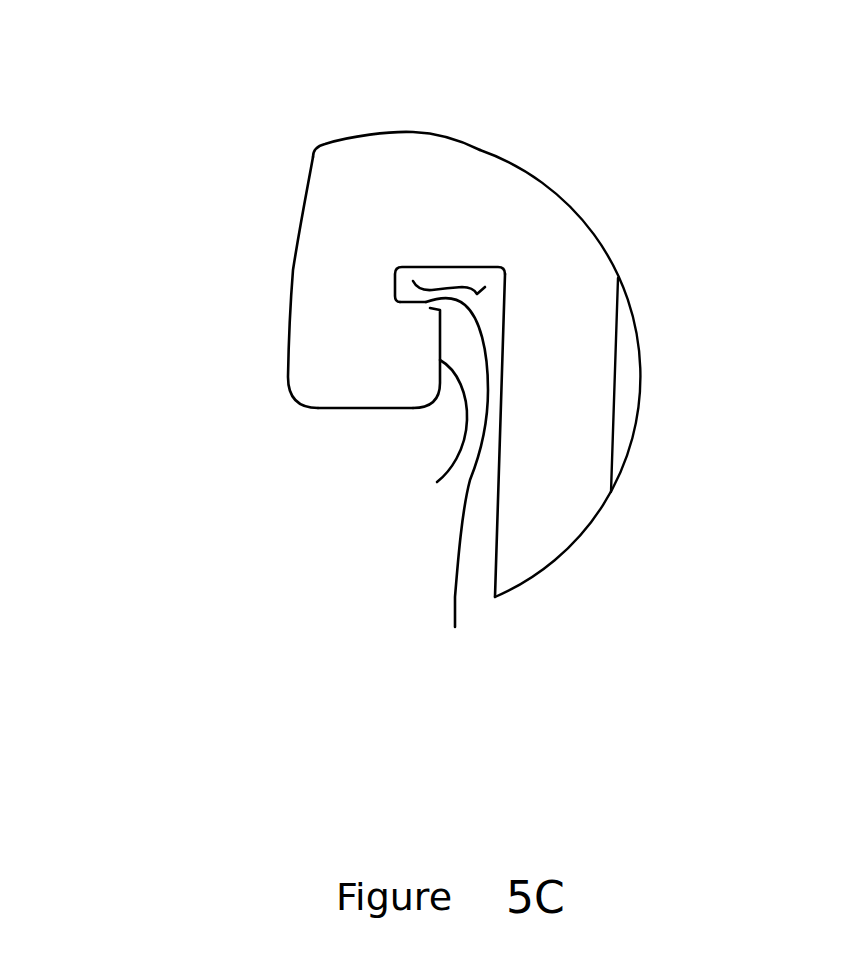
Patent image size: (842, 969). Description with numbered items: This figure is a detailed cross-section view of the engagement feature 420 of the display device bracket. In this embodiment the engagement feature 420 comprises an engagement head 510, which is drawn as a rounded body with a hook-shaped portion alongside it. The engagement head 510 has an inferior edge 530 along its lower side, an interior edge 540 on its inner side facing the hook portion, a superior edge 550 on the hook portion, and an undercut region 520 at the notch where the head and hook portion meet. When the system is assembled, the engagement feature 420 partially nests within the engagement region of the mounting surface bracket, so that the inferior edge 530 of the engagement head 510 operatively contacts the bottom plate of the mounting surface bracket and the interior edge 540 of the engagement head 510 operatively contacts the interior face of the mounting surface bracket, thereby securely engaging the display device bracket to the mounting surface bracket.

The engagement feature 420 is at (618, 142).
The engagement head 510 is at (360, 342).
The undercut region 520 is at (447, 290).
The inferior edge 530 is at (357, 410).
The interior edge 540 is at (437, 482).
The superior edge 550 is at (455, 627).